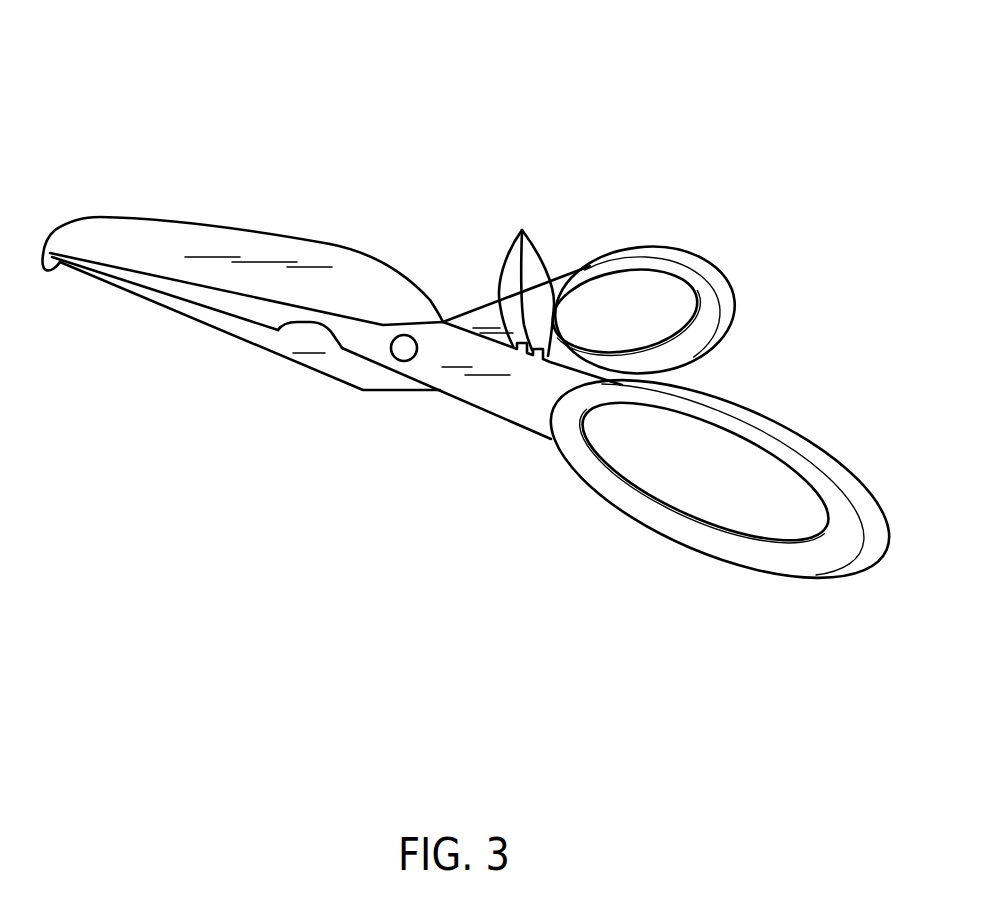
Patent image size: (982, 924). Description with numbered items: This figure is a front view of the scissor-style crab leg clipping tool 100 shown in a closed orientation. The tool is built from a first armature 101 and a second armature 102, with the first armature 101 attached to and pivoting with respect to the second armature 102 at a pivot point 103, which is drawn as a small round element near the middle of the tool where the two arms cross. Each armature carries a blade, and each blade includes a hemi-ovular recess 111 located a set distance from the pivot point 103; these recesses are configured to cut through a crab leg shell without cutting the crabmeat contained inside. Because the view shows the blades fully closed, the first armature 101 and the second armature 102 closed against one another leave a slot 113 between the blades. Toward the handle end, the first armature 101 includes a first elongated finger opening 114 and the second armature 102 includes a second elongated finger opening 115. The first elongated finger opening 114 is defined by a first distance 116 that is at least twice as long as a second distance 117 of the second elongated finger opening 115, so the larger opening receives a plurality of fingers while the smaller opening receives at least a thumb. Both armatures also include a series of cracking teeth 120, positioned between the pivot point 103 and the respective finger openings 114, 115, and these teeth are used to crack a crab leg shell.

The scissor-style crab leg clipping tool 100 is at (234, 98).
The first armature 101 is at (472, 401).
The second armature 102 is at (443, 322).
The pivot point 103 is at (405, 350).
The hemi-ovular recess 111 is at (282, 327).
The slot 113 is at (310, 323).
The first elongated finger opening 114 is at (680, 510).
The second elongated finger opening 115 is at (643, 271).
The first distance 116 is at (818, 520).
The second distance 117 is at (690, 298).
The cracking teeth 120 is at (525, 277).